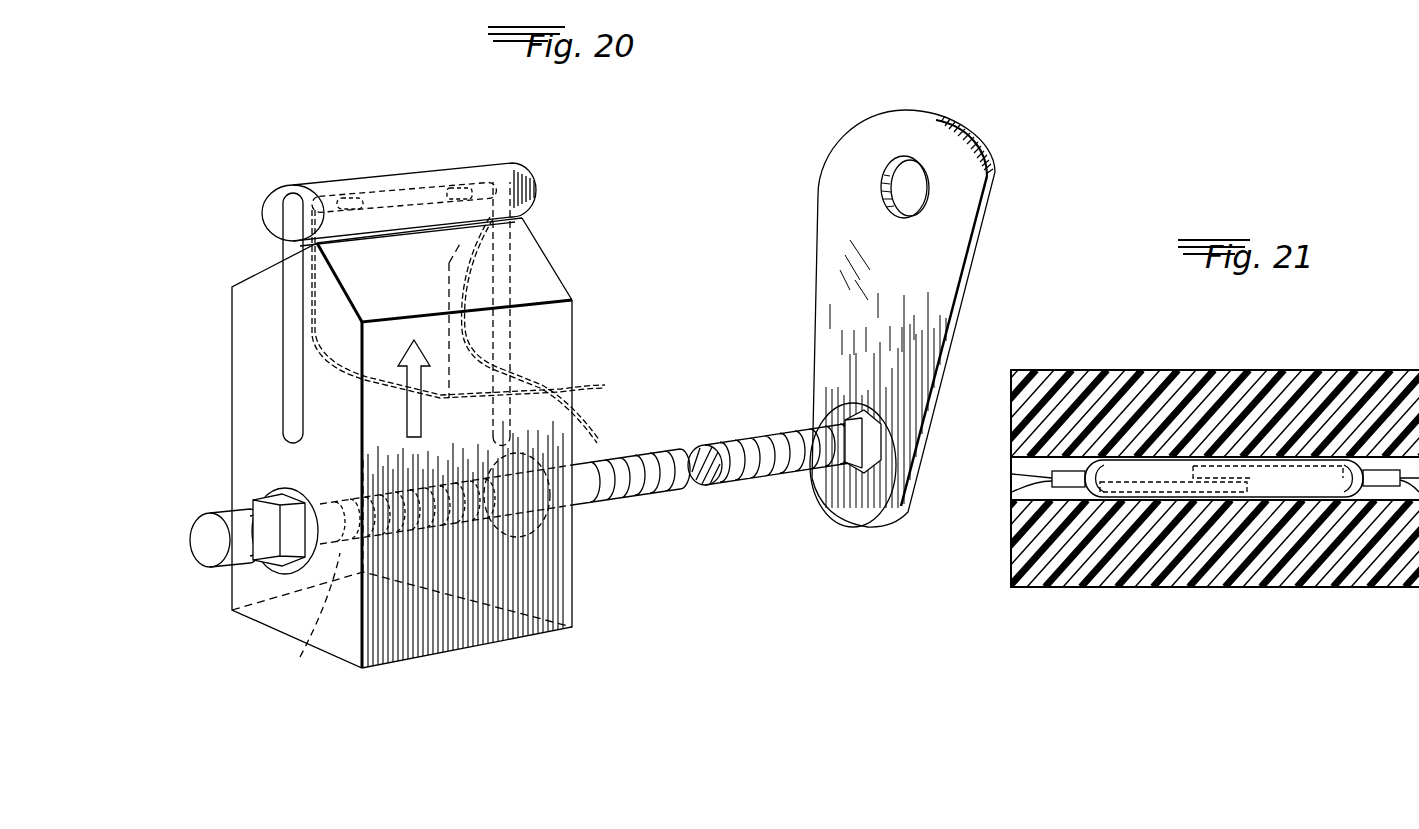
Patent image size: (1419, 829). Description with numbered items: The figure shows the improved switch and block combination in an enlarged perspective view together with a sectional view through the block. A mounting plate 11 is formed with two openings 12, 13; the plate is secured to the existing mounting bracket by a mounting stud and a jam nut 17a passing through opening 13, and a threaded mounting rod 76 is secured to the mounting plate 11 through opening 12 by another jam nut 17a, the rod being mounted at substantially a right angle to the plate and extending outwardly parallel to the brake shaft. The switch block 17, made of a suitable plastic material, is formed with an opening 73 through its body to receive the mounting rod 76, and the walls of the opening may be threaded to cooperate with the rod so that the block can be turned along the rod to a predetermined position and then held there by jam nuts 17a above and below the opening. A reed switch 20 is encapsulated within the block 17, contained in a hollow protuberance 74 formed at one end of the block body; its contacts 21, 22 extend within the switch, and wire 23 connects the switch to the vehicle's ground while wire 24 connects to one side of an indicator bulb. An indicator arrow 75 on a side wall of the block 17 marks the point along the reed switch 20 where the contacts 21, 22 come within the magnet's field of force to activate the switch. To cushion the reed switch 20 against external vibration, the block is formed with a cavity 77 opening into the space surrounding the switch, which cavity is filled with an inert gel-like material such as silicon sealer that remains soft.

In FIG. 20, the mounting plate 11 is at (938, 322).
In FIG. 20, the opening 12 is at (883, 442).
In FIG. 20, the opening 13 is at (900, 158).
In FIG. 20, the switch block 17 is at (462, 636).
In FIG. 21, the switch block 17 is at (1212, 588).
In FIG. 20, the jam nut 17a is at (282, 565).
In FIG. 20, the reed switch 20 is at (400, 190).
In FIG. 21, the reed switch 20 is at (1193, 464).
In FIG. 20, the contact 21 is at (358, 200).
In FIG. 21, the contact 21 is at (1155, 490).
In FIG. 20, the contact 22 is at (455, 188).
In FIG. 21, the contact 22 is at (1305, 466).
In FIG. 20, the wire 23 is at (597, 447).
In FIG. 21, the wire 23 is at (1030, 484).
In FIG. 20, the wire 24 is at (605, 388).
In FIG. 21, the wire 24 is at (1414, 480).
In FIG. 20, the opening 73 is at (301, 615).
In FIG. 20, the hollow protuberance 74 is at (288, 196).
In FIG. 20, the indicator arrow 75 is at (415, 424).
In FIG. 20, the threaded mounting rod 76 is at (218, 518).
In FIG. 20, the cavity 77 is at (287, 303).
In FIG. 21, the cavity 77 is at (1012, 462).